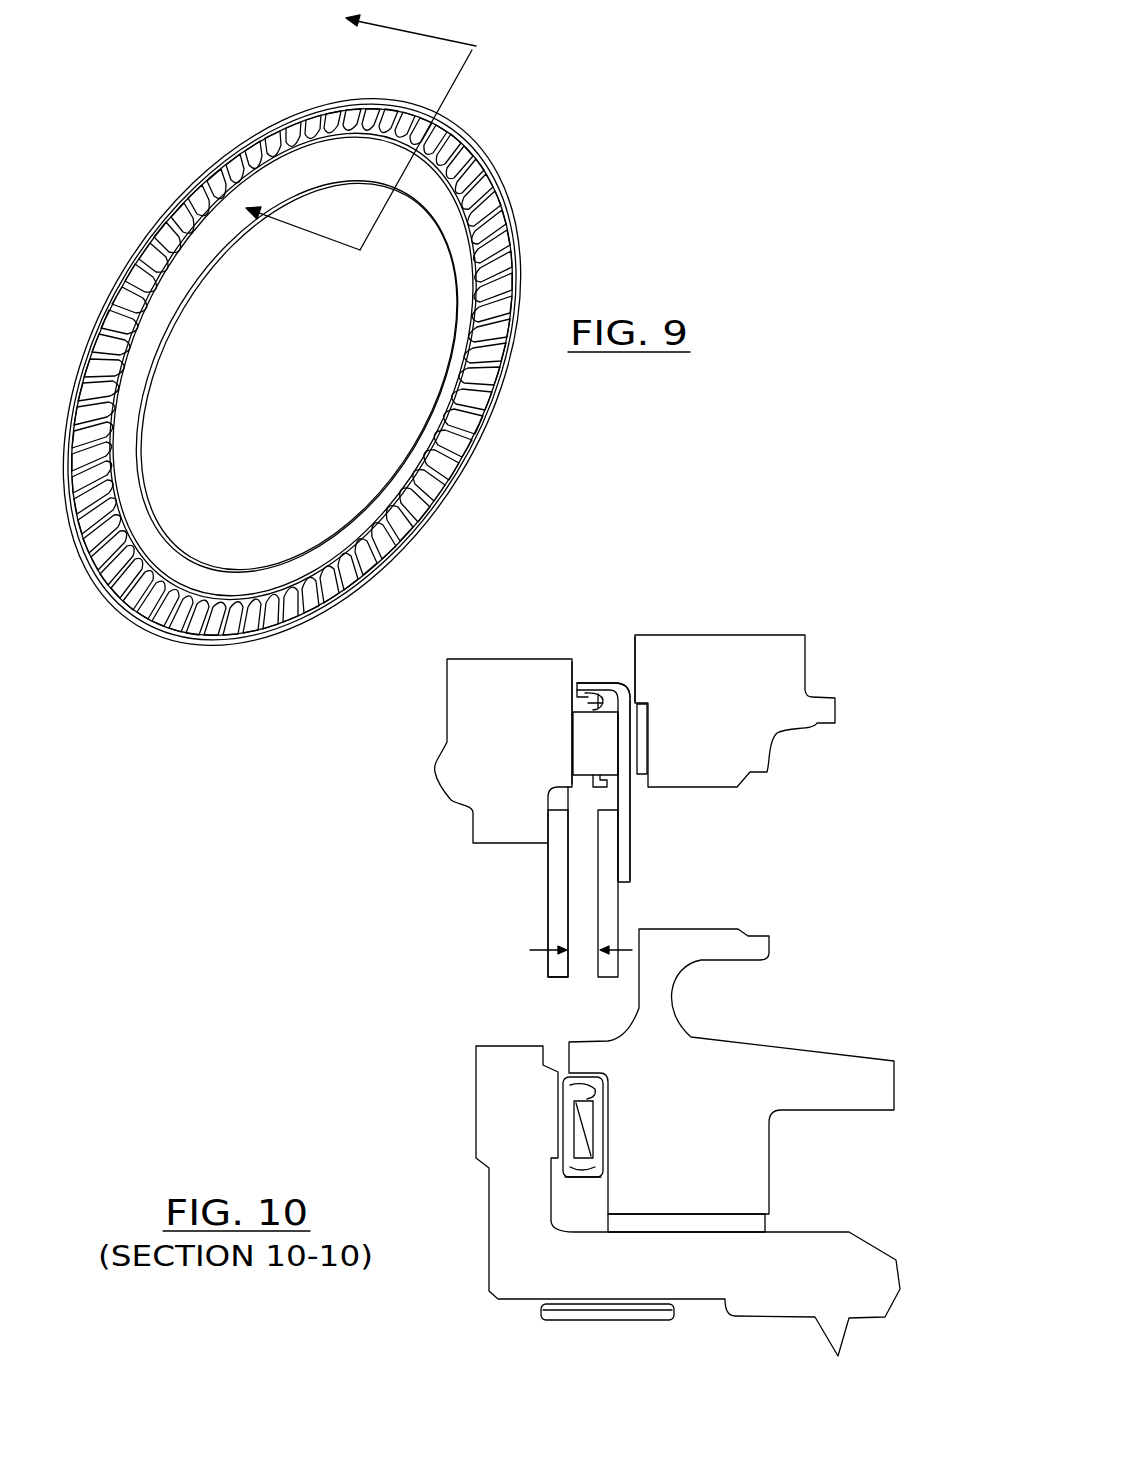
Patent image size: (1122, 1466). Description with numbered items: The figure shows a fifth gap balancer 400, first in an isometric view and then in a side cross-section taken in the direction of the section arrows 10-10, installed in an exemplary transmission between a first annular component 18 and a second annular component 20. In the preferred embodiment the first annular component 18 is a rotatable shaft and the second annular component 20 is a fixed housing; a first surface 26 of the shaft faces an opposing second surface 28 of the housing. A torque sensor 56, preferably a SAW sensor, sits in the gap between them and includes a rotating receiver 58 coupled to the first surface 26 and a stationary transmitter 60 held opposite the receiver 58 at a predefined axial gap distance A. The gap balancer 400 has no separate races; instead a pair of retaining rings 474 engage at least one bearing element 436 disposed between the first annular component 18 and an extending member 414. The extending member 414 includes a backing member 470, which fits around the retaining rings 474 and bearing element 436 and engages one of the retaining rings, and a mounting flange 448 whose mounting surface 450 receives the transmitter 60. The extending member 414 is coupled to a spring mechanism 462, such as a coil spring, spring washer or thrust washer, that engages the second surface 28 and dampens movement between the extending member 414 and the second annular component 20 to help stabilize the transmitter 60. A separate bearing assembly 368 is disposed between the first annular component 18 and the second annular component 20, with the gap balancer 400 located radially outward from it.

In FIG. 9, the section arrows 10- 10 is at (374, 148).
In FIG. 9, the fifth gap balancer 400 is at (307, 372).
In FIG. 10, the fifth gap balancer 400 is at (614, 730).
In FIG. 9, the seal 474 is at (255, 145).
In FIG. 10, the seal 474 is at (597, 707).
In FIG. 9, the bearing element 436 is at (147, 267).
In FIG. 10, the bearing element 436 is at (590, 735).
In FIG. 9, the backing member 470 is at (87, 373).
In FIG. 10, the backing member 470 is at (601, 685).
In FIG. 9, the extending member 414 is at (243, 247).
In FIG. 10, the extending member 414 is at (633, 720).
In FIG. 9, the mounting flange 448 is at (163, 328).
In FIG. 10, the mounting flange 448 is at (691, 730).
In FIG. 9, the mounting surface 450 is at (136, 393).
In FIG. 10, the mounting surface 450 is at (610, 857).
In FIG. 10, the first annular component 18 is at (511, 728).
In FIG. 10, the first surface 26 is at (587, 668).
In FIG. 10, the second annular component 20 is at (726, 678).
In FIG. 10, the second surface 28 is at (635, 637).
In FIG. 10, the spring mechanism 462 is at (643, 703).
In FIG. 10, the receiver 58 is at (557, 888).
In FIG. 10, the transmitter 60 is at (610, 925).
In FIG. 10, the torque sensor 56 is at (488, 950).
In FIG. 10, the bearing assembly 368 is at (544, 1130).